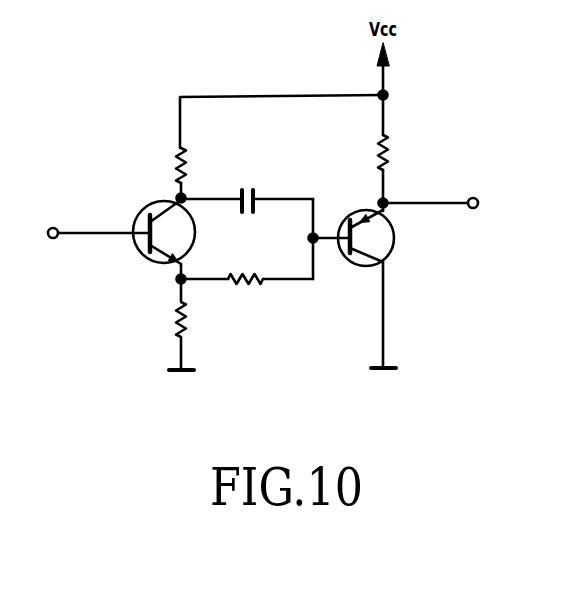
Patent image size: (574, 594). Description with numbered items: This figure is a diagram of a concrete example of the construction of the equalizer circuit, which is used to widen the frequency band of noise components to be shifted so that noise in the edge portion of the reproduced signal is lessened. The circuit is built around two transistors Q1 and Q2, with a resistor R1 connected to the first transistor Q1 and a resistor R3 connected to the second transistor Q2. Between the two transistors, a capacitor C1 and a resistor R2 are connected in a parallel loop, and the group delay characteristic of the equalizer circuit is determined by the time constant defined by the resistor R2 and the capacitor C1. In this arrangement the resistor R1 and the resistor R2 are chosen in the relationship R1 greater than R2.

The resistor R1 is at (175, 165).
The resistor R2 is at (243, 284).
The resistor R3 is at (390, 152).
The capacitor C1 is at (243, 188).
The transistor Q1 is at (146, 260).
The transistor Q2 is at (390, 244).